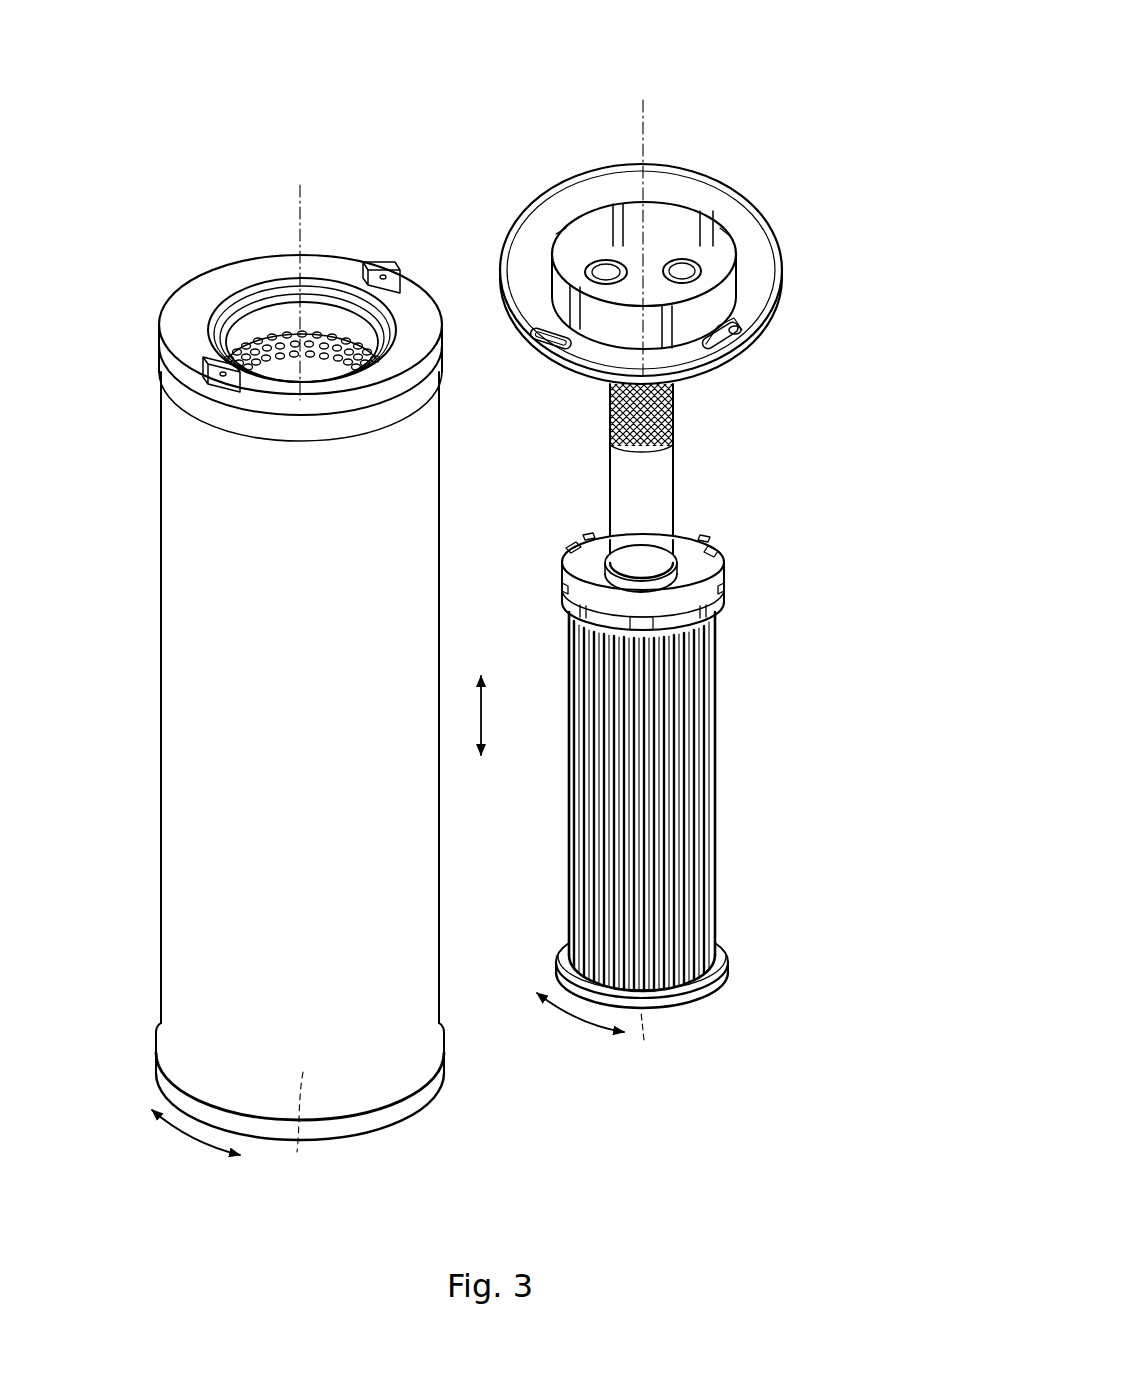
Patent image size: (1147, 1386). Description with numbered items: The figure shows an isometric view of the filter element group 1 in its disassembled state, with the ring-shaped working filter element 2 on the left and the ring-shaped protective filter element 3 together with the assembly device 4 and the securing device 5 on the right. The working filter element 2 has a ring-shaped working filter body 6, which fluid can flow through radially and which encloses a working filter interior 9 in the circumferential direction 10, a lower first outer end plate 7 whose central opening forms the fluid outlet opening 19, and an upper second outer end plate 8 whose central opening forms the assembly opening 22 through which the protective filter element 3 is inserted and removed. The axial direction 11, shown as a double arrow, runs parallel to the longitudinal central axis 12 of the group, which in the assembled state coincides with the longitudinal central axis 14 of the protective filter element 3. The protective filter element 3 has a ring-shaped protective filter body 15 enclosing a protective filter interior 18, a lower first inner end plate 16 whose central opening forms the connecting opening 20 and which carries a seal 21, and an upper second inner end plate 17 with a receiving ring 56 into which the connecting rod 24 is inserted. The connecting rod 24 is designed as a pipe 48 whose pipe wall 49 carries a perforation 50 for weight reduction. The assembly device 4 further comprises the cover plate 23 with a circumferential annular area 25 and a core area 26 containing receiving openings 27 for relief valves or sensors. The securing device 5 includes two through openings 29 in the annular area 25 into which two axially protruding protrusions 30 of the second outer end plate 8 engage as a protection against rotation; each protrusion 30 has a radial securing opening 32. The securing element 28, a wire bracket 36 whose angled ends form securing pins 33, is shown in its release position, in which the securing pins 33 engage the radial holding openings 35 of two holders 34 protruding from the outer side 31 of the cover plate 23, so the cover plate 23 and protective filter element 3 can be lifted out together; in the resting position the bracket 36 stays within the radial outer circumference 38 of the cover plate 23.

The filter element group 1 is at (918, 176).
The working filter element 2 is at (152, 878).
The protective filter element 3 is at (722, 779).
The assembly device 4 is at (525, 218).
The securing device 5 is at (700, 152).
The working filter body 6 is at (287, 716).
The first outer end plate 7 is at (150, 1062).
The second outer end plate 8 is at (157, 318).
The working filter interior 9 is at (312, 370).
The circumferential direction 10 is at (192, 1140).
The axial direction 11 is at (484, 713).
The longitudinal central axis 12 is at (298, 212).
The longitudinal central axis 14 is at (640, 108).
The protective filter body 15 is at (700, 703).
The first inner end plate 16 is at (705, 999).
The second inner end plate 17 is at (730, 572).
The protective filter interior 18 is at (590, 813).
The fluid outlet opening 19 is at (302, 1128).
The connecting opening 20 is at (645, 1039).
The seal 21 is at (724, 963).
The assembly opening 22 is at (335, 320).
The cover plate 23 is at (788, 262).
The connecting rod 24 is at (682, 481).
The annular area 25 is at (758, 312).
The core area 26 is at (655, 214).
The receiving opening 27 is at (603, 260).
The securing element 28 is at (750, 196).
The through opening 29 is at (543, 340).
The protrusion 30 is at (381, 266).
The outer side 31 is at (532, 282).
The securing opening 32 is at (398, 300).
The securing pin 33 is at (714, 346).
The holder 34 is at (730, 352).
The holding opening 35 is at (745, 345).
The bracket 36 is at (762, 240).
The radial outer circumference 38 is at (781, 291).
The pipe 48 is at (602, 469).
The pipe wall 49 is at (622, 494).
The perforation 50 is at (610, 418).
The receiving ring 56 is at (608, 581).